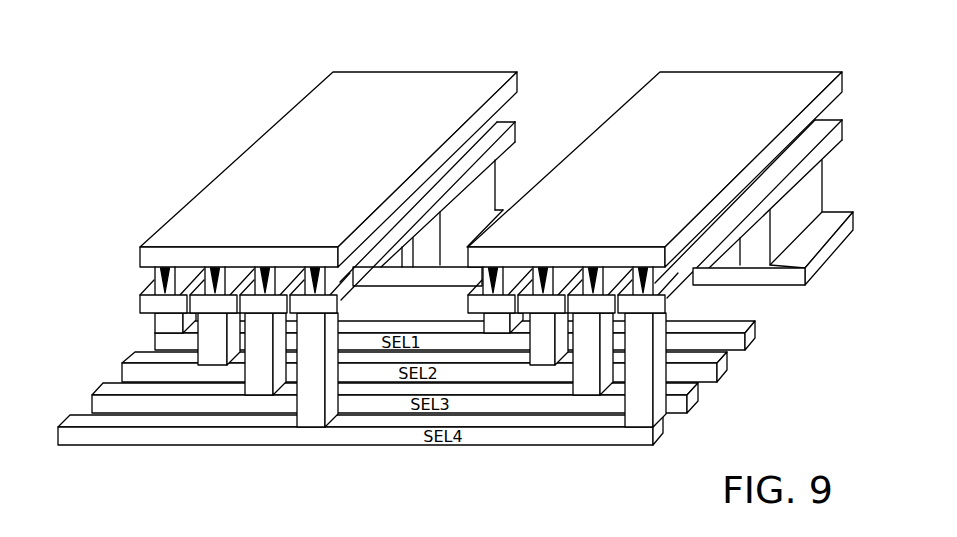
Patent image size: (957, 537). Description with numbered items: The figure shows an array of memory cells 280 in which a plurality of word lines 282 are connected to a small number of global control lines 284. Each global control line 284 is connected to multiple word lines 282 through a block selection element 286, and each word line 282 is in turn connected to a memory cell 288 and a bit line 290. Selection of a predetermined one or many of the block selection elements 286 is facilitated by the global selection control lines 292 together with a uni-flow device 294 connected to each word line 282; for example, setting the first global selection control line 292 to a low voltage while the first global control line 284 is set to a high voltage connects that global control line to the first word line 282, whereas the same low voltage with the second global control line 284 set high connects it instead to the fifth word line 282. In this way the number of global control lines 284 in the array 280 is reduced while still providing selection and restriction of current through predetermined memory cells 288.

The array of memory cells 280 is at (210, 56).
The word lines 282 is at (140, 312).
The global control line 284 is at (236, 160).
The block selection element 286 is at (139, 275).
The memory cell 288 is at (510, 172).
The bit line 290 is at (781, 287).
The global selection control line 292 is at (167, 447).
The uni-flow device 294 is at (310, 423).